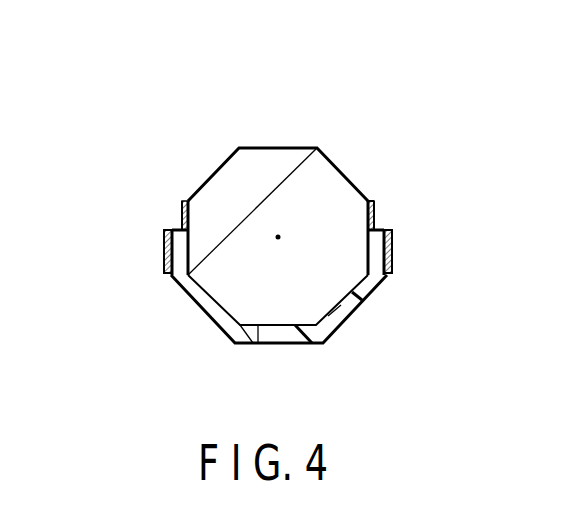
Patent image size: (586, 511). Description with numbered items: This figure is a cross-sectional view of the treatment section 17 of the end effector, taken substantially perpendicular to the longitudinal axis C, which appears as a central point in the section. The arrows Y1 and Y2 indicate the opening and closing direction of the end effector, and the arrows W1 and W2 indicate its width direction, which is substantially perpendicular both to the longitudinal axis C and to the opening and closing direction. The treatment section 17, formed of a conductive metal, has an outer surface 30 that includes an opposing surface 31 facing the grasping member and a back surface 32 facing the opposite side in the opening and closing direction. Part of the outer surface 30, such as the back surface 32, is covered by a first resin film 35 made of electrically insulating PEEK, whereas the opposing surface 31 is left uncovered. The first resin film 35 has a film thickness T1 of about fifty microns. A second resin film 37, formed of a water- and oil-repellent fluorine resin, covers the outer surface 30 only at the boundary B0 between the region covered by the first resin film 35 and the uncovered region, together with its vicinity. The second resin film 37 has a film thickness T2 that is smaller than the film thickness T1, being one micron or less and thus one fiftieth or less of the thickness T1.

The outer surface 30 is at (282, 234).
The opposing surface 31 is at (285, 147).
The back surface 32 is at (241, 345).
The first resin film 35 is at (316, 344).
The second resin film 37 is at (164, 258).
The treatment section 17 is at (323, 181).
The longitudinal axis C is at (280, 238).
The boundary B0 is at (182, 228).
The film thickness of first resin film T1 is at (258, 297).
The film thickness of second resin film T2 is at (337, 210).
The arrow indicating width direction W1 is at (364, 33).
The arrow indicating width direction W2 is at (248, 33).
The arrow indicating opening and closing direction Y1 is at (60, 154).
The arrow indicating opening and closing direction Y2 is at (60, 267).